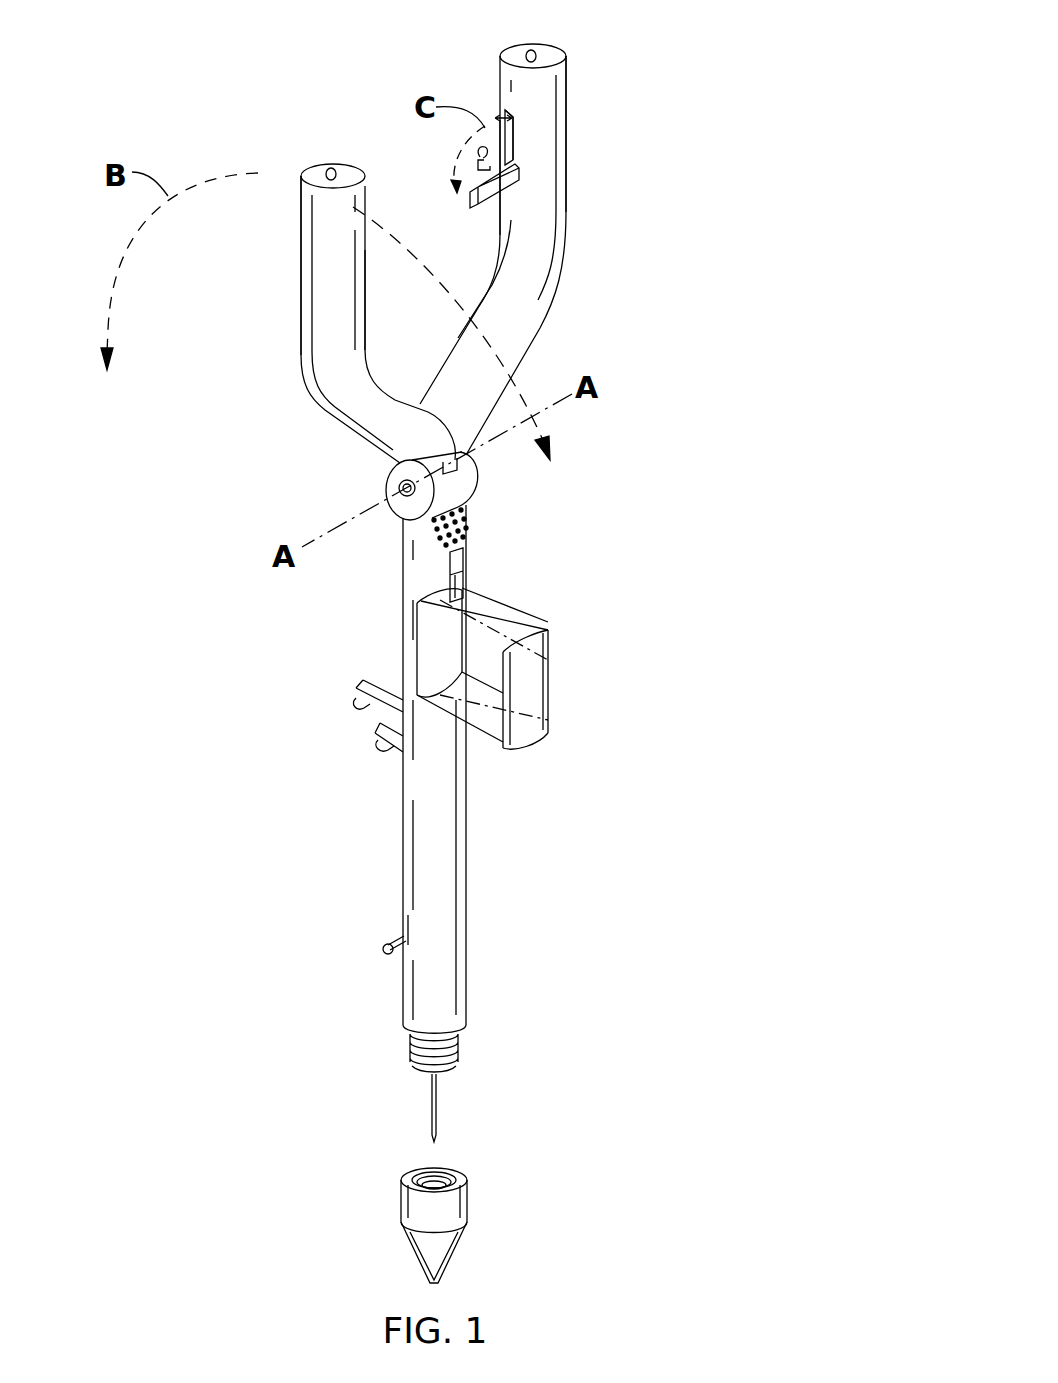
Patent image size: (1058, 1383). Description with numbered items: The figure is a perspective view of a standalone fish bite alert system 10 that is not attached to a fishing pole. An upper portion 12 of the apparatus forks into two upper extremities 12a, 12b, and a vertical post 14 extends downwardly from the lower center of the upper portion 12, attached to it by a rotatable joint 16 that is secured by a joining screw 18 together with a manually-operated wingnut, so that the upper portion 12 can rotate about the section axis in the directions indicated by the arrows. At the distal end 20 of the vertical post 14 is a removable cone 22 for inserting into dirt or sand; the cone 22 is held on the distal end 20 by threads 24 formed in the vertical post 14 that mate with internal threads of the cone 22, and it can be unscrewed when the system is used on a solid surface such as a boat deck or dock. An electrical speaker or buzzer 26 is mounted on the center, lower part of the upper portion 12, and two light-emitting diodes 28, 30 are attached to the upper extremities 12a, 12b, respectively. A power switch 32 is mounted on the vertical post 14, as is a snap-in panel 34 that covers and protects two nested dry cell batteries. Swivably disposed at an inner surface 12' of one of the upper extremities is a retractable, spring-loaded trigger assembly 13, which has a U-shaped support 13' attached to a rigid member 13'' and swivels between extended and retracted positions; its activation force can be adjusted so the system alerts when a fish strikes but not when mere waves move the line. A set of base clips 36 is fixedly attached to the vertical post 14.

The fish bite alert system 10 is at (725, 233).
The upper portion 12 is at (434, 205).
The inner surface 12' is at (432, 235).
The upper extremity 12a is at (302, 186).
The upper extremity 12b is at (566, 93).
The trigger assembly 13 is at (451, 162).
The U-shaped support 13' is at (426, 146).
The rigid member 13'' is at (476, 100).
The vertical post 14 is at (403, 837).
The rotatable joint 16 is at (480, 472).
The joining screw 18 is at (398, 488).
The distal end 20 is at (468, 1014).
The removable cone 22 is at (468, 1200).
The threads 24 is at (458, 1045).
The electrical speaker or buzzer 26 is at (470, 517).
The light-emitting diode 28 is at (330, 168).
The light-emitting diode 30 is at (531, 50).
The power switch 32 is at (458, 577).
The snap-in panel 34 is at (548, 674).
The base clips 36 is at (368, 752).